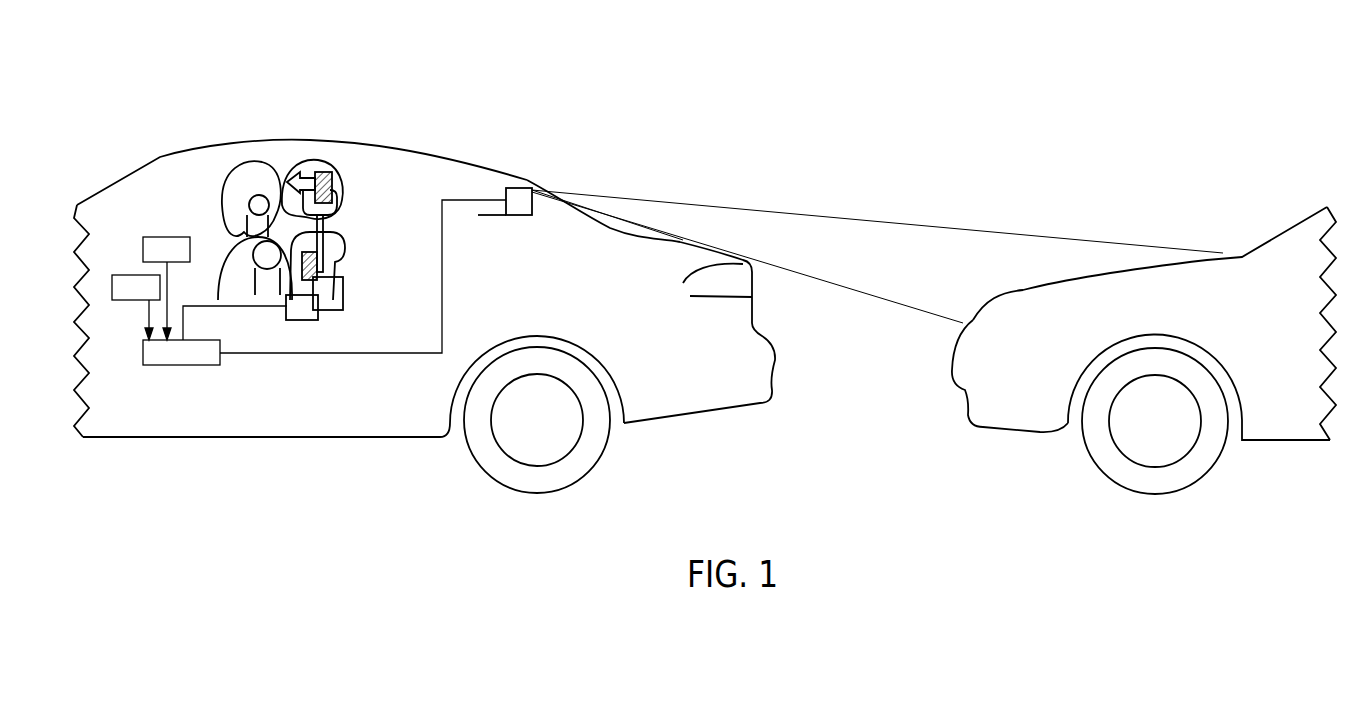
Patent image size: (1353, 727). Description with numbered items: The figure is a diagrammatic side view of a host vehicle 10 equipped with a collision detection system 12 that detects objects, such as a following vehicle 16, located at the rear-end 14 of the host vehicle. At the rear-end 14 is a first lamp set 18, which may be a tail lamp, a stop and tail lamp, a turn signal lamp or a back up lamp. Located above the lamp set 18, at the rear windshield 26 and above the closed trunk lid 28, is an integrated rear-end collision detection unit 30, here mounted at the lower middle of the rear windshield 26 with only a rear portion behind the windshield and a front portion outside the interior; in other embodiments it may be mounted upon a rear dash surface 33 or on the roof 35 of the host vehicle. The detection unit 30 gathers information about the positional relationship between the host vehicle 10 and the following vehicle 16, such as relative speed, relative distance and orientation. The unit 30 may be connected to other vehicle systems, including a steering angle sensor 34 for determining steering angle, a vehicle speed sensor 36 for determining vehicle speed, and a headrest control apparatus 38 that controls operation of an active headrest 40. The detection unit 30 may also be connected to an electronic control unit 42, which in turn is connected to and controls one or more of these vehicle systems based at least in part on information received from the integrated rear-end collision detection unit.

The host vehicle 10 is at (143, 133).
The collision detection system 12 is at (582, 142).
The rear-end 14 is at (752, 318).
The following vehicle 16 is at (1243, 210).
The first lamp set 18 is at (683, 282).
The rear windshield 26 is at (485, 163).
The trunk lid 28 is at (680, 238).
The integrated rear-end collision detection unit 30 is at (520, 187).
The rear dash surface 33 is at (490, 218).
The steering angle sensor 34 is at (165, 237).
The roof 35 is at (393, 147).
The vehicle speed sensor 36 is at (132, 300).
The headrest control apparatus 38 is at (332, 195).
The active headrest 40 is at (298, 153).
The electronic control unit 42 is at (180, 366).